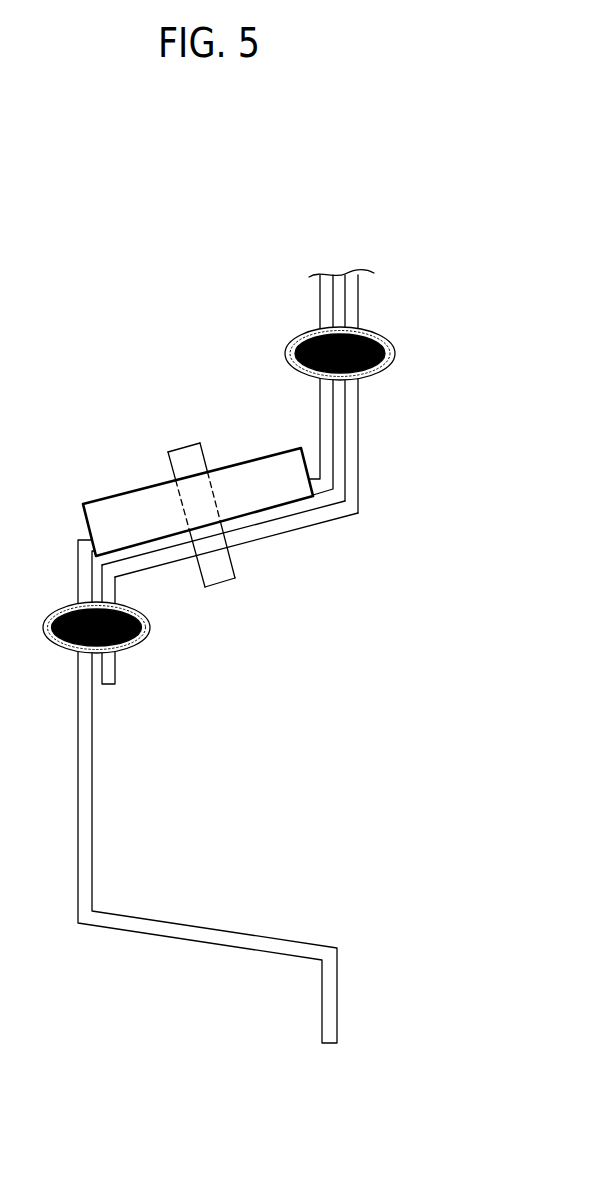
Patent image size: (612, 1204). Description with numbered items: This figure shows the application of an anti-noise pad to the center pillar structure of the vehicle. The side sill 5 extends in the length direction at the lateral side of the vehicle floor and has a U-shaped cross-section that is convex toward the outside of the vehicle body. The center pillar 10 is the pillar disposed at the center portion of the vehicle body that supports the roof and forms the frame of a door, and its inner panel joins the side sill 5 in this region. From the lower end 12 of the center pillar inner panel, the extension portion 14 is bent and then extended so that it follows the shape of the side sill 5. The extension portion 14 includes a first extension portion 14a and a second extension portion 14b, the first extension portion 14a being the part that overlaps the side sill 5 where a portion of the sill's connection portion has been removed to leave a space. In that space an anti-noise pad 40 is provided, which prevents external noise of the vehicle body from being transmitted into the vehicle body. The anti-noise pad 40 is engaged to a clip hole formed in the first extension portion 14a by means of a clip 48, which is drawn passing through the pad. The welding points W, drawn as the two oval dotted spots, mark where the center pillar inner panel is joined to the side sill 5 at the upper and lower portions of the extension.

The side sill 5 is at (320, 310).
The center pillar 10 is at (294, 479).
The lower end 12 is at (352, 447).
The extension portion 14 is at (294, 592).
The first extension portion 14a is at (313, 525).
The second extension portion 14b is at (116, 667).
The anti-noise pad 40 is at (259, 480).
The clip 48 is at (187, 462).
The welding points W is at (53, 610).